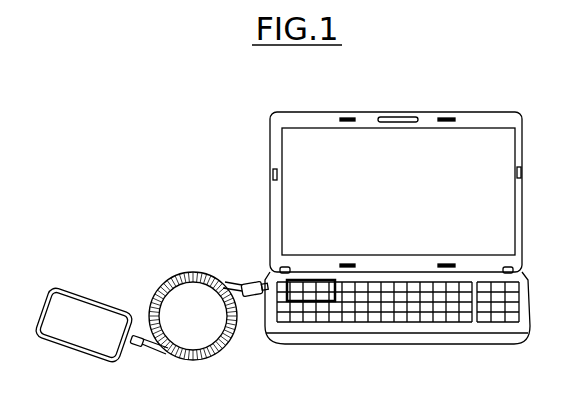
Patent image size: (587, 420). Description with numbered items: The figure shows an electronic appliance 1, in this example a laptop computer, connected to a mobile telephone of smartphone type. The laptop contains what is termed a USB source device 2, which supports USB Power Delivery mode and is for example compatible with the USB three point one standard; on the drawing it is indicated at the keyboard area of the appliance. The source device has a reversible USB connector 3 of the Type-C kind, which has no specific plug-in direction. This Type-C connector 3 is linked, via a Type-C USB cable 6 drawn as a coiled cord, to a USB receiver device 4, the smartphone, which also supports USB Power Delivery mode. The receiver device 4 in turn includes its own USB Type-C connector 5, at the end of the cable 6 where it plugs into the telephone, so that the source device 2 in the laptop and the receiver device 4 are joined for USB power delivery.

The electronic appliance 1 is at (486, 108).
The USB source device 2 is at (317, 276).
The reversible USB connector 3 is at (268, 281).
The USB receiver device 4 is at (78, 288).
The USB Type-C connector 5 is at (130, 352).
The Type-C USB cable 6 is at (194, 270).